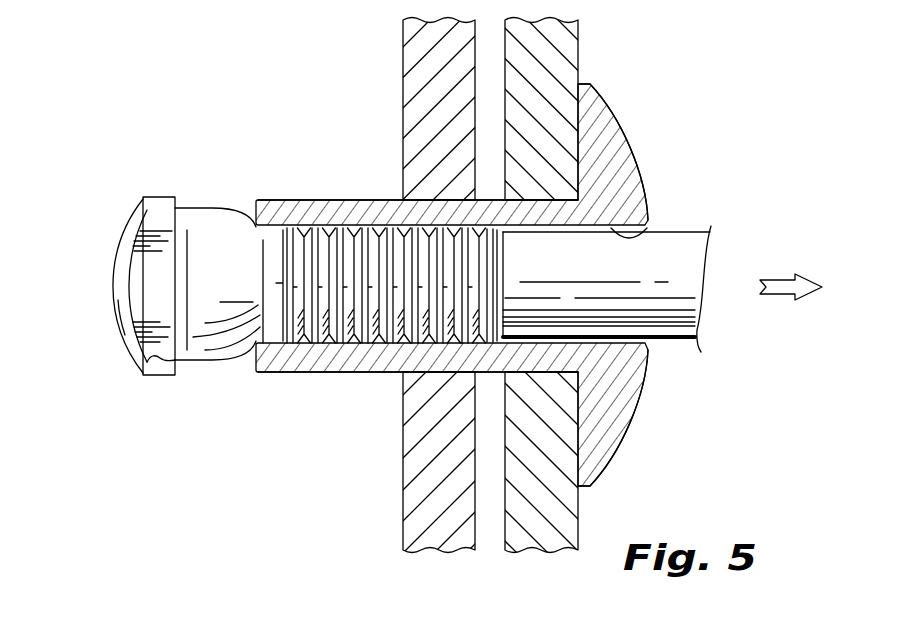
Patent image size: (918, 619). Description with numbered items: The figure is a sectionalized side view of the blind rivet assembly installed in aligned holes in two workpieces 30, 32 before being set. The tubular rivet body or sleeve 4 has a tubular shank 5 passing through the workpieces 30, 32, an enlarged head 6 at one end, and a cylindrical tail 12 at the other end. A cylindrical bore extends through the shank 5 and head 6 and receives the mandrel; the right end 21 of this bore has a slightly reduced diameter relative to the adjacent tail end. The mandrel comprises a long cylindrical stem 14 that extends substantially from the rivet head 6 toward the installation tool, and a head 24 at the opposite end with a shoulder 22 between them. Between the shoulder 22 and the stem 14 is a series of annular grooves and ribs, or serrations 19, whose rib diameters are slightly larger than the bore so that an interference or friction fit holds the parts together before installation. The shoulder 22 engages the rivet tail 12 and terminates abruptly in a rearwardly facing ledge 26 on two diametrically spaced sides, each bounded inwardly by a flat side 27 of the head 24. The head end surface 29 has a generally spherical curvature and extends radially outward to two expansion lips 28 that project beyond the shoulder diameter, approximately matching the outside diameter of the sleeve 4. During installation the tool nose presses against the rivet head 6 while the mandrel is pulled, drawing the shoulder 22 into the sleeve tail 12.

The rivet body or sleeve 4 is at (369, 378).
The tubular shank 5 is at (383, 198).
The enlarged head 6 is at (610, 140).
The cylindrical tail 12 is at (274, 213).
The cylindrical stem 14 is at (697, 254).
The annular grooves and ribs or serrations 19 is at (322, 235).
The right end of the bore 21 is at (651, 228).
The shoulder 22 is at (210, 236).
The head 24 is at (121, 229).
The rearwardly facing ledge 26 is at (148, 360).
The flat side 27 is at (143, 283).
The expansion lips or protrusions 28 is at (166, 197).
The end surface 29 is at (113, 318).
The workpiece 30 is at (563, 47).
The workpiece 32 is at (420, 50).